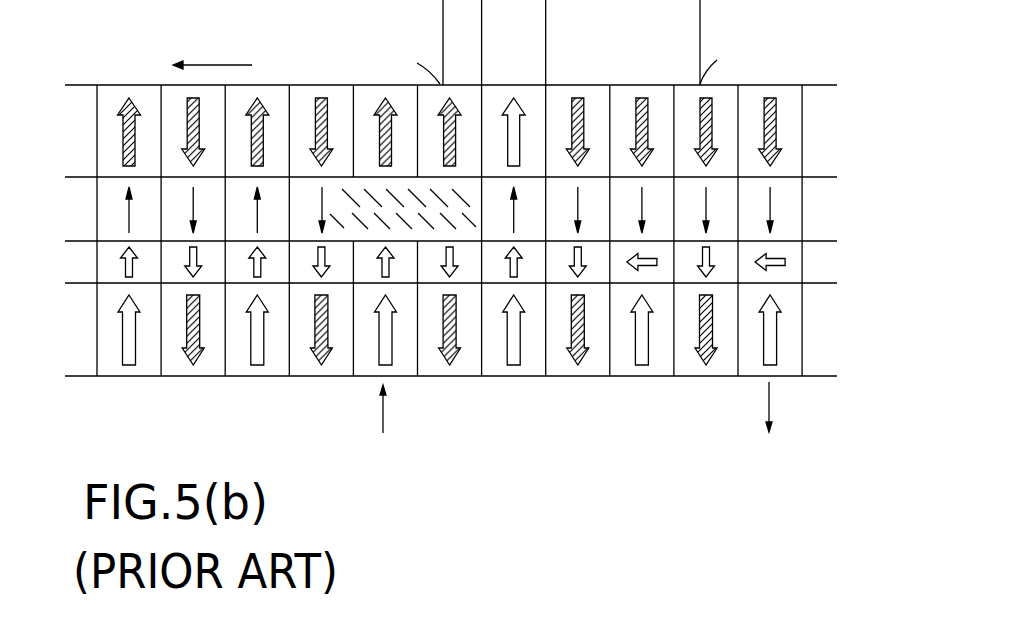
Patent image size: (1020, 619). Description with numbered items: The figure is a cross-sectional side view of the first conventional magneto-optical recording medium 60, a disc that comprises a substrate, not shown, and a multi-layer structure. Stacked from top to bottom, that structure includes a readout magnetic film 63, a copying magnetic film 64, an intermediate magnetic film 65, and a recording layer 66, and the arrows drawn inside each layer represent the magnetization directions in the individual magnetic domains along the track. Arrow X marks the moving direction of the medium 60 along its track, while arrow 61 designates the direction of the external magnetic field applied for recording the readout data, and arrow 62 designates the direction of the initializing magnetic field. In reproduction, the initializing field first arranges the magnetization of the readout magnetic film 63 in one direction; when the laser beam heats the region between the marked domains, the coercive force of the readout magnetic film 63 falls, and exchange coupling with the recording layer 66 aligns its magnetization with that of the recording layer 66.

The magneto-optical recording medium 60 is at (110, 68).
The arrow designating direction of external magnetic field 61 is at (405, 413).
The arrow designating direction of initializing magnetic field 62 is at (791, 407).
The readout magnetic film 63 is at (808, 128).
The copying magnetic film 64 is at (808, 207).
The intermediate magnetic film 65 is at (808, 262).
The recording layer 66 is at (808, 342).